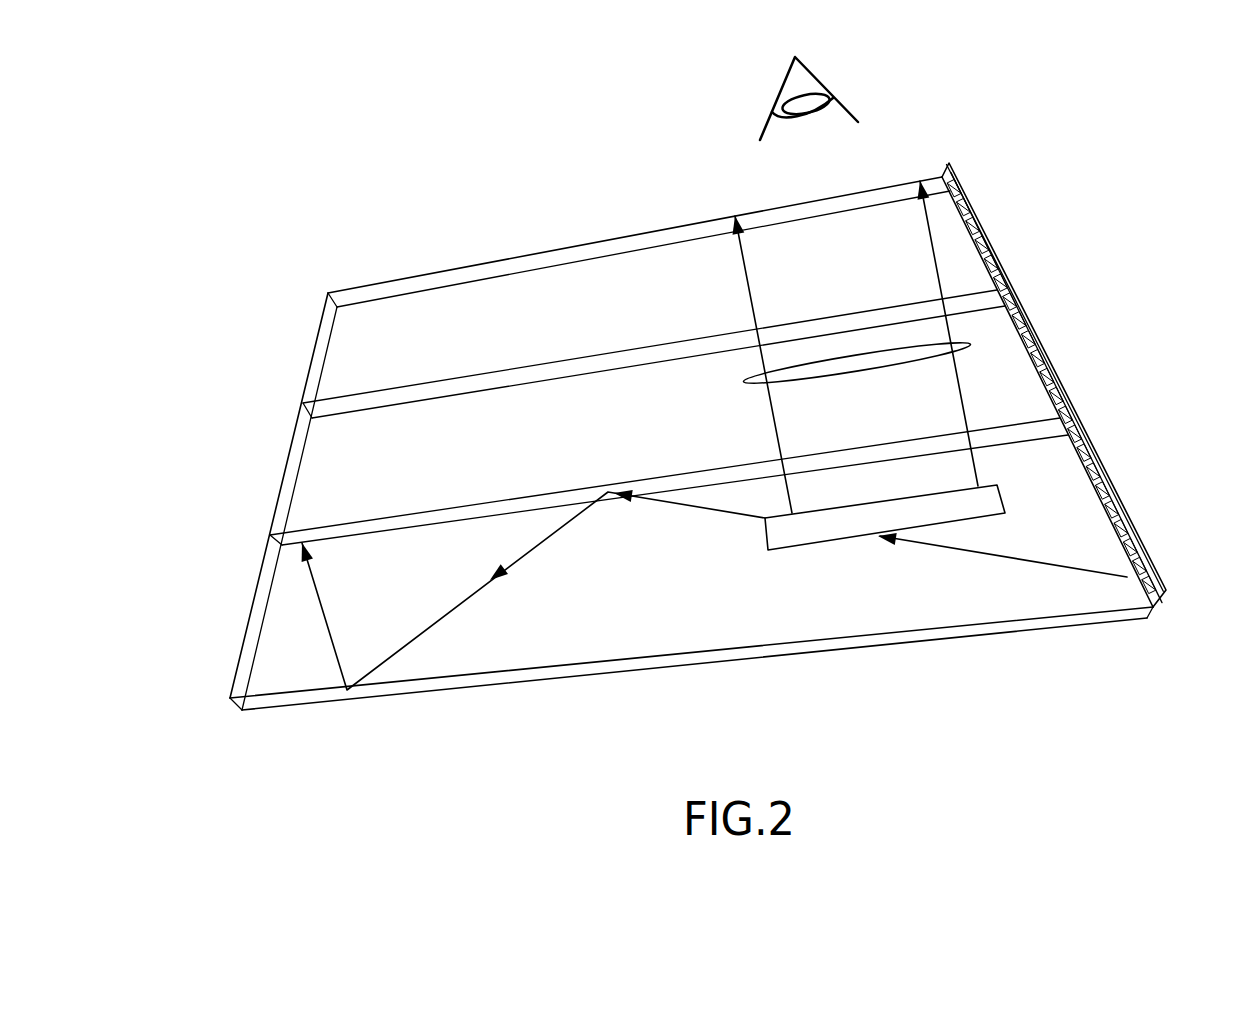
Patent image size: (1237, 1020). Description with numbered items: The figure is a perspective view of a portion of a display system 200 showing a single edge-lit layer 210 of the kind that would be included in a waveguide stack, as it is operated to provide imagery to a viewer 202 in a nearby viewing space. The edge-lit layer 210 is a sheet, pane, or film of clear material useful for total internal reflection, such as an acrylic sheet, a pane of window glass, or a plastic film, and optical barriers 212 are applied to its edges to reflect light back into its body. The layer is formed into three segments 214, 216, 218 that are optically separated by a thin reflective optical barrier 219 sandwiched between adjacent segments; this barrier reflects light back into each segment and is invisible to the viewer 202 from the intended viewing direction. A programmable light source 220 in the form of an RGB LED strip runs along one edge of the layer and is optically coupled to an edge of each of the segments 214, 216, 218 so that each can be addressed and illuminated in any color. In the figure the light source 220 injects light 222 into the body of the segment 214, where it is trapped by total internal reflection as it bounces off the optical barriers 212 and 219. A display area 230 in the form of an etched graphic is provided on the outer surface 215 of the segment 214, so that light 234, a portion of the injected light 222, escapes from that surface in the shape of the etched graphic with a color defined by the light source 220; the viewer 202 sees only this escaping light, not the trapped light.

The display system 200 is at (352, 208).
The viewer 202 is at (813, 73).
The edge-lit layer 210 is at (522, 252).
The optical barriers 212 is at (363, 285).
The segment 214 is at (433, 662).
The outer surface 215 is at (842, 623).
The segment 216 is at (488, 484).
The segment 218 is at (420, 309).
The optical barrier 219 is at (973, 303).
The programmable light source 220 is at (1005, 268).
The light 222 is at (1062, 565).
The display area 230 is at (1003, 495).
The light 234 is at (972, 345).